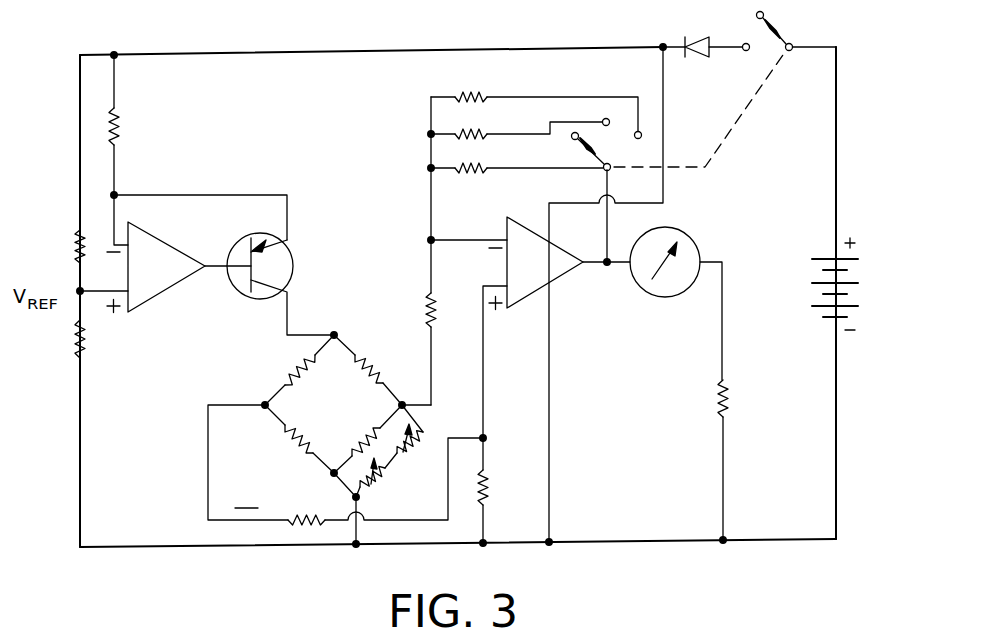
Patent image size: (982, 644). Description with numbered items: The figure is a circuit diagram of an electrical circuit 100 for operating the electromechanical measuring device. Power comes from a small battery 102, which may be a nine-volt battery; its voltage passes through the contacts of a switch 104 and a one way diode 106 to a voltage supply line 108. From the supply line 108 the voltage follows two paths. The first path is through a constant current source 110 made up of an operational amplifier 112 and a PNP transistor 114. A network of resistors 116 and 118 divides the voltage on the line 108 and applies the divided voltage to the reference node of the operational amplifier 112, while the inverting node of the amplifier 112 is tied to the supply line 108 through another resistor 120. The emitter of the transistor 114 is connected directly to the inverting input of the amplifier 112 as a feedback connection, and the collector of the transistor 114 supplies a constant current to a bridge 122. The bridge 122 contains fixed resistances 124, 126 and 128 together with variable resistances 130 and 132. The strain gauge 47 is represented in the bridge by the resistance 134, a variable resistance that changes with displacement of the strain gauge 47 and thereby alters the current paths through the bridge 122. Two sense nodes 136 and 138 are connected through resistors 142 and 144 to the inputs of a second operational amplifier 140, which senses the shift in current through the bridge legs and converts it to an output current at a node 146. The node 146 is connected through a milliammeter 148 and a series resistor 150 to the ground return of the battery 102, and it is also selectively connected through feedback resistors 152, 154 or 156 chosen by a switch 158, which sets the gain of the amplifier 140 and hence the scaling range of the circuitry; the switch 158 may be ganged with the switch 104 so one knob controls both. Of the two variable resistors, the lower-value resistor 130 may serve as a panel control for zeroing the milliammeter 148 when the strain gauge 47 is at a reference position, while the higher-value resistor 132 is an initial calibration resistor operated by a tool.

The electrical circuit 100 is at (132, 566).
The battery 102 is at (857, 277).
The switch 104 is at (776, 43).
The one way diode 106 is at (700, 36).
The voltage supply line 108 is at (304, 50).
The constant current source 110 is at (255, 224).
The operational amplifier 112 is at (160, 248).
The PNP transistor 114 is at (290, 270).
The resistor 116 is at (74, 344).
The resistor 118 is at (75, 241).
The resistor 120 is at (120, 122).
The bridge 122 is at (325, 412).
The fixed resistance 124 is at (300, 374).
The fixed resistance 126 is at (360, 362).
The fixed resistance 128 is at (360, 444).
The variable resistor 130 is at (378, 478).
The variable resistor 132 is at (420, 448).
The resistance 134 is at (312, 444).
The sense node 136 is at (263, 404).
The sense node 138 is at (404, 403).
The second operational amplifier 140 is at (533, 288).
The resistor 142 is at (300, 525).
The resistor 144 is at (427, 300).
The node 146 is at (607, 275).
The milliammeter 148 is at (690, 245).
The series resistor 150 is at (728, 400).
The feedback resistor 152 is at (478, 165).
The feedback resistor 154 is at (478, 129).
The feedback resistor 156 is at (478, 92).
The switch 158 is at (594, 158).
The strain gauge 47 is at (247, 477).